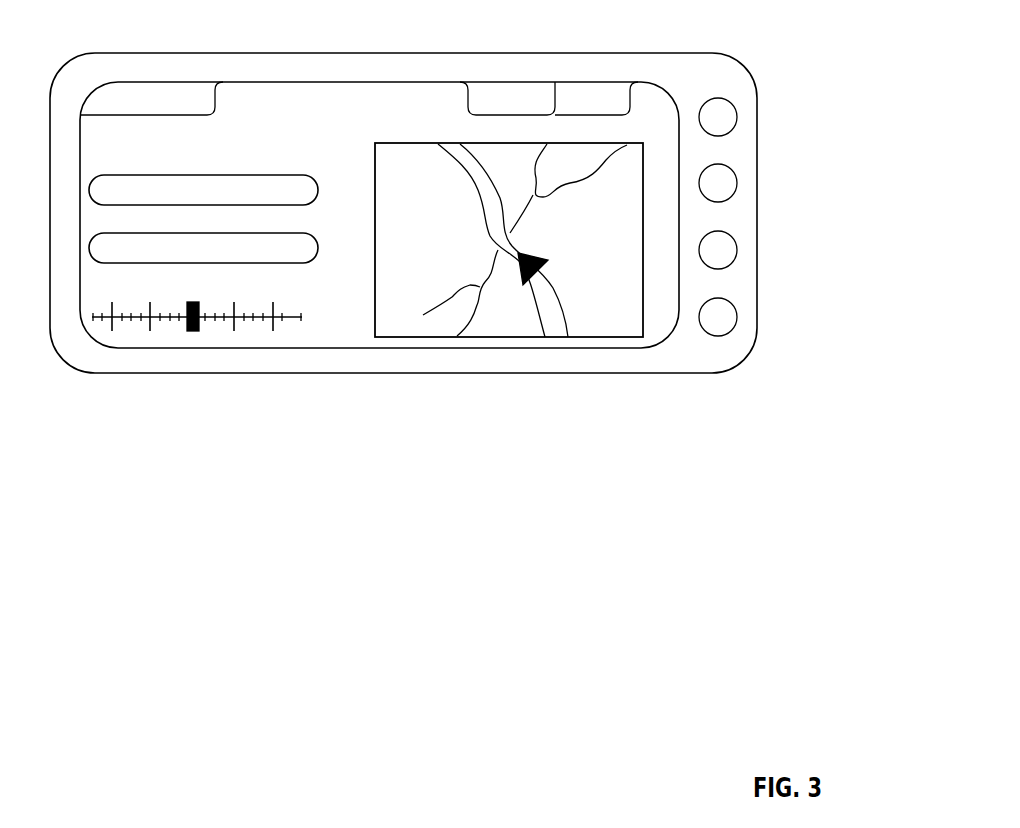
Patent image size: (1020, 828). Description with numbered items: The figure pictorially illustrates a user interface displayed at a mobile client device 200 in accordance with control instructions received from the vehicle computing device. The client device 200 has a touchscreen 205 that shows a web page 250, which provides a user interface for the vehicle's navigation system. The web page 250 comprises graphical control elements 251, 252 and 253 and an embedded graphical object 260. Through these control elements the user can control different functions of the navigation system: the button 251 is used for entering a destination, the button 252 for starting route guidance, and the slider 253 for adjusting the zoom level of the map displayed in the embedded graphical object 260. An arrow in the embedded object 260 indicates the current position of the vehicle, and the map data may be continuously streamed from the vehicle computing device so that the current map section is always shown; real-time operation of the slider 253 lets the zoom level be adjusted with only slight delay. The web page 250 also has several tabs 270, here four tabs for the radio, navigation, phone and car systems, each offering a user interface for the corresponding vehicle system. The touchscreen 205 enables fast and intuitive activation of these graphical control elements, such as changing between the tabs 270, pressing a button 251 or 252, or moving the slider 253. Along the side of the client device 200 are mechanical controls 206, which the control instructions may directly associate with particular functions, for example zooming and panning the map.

The client device 200 is at (700, 53).
The touchscreen 205 is at (656, 84).
The mechanical controls 206 is at (737, 117).
The tabs 270 is at (577, 85).
The web page 250 is at (309, 340).
The graphical control element 251 is at (318, 178).
The graphical control element 252 is at (318, 235).
The slider 253 is at (291, 316).
The embedded graphical object 260 is at (375, 323).